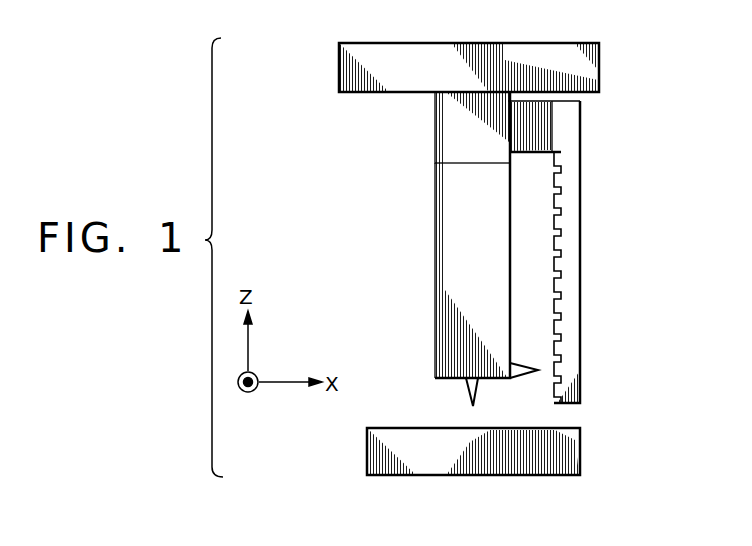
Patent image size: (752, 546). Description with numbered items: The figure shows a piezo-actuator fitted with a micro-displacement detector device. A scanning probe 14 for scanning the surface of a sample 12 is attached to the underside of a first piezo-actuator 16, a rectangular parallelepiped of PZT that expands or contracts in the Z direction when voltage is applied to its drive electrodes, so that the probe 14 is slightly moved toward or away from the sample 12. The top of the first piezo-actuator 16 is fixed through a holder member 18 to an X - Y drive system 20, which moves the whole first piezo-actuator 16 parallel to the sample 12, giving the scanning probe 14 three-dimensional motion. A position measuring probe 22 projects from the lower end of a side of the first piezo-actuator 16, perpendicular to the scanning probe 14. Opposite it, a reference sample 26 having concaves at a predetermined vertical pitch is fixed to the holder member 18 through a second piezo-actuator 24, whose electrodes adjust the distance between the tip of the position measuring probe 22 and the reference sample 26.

The sample 12 is at (582, 451).
The probe 14 is at (469, 402).
The first piezo-actuator 16 is at (433, 266).
The holder member 18 is at (434, 127).
The X - Y drive system 20 is at (538, 50).
The position measuring probe 22 is at (513, 366).
The second piezo-actuator 24 is at (529, 154).
The reference sample 26 is at (581, 191).